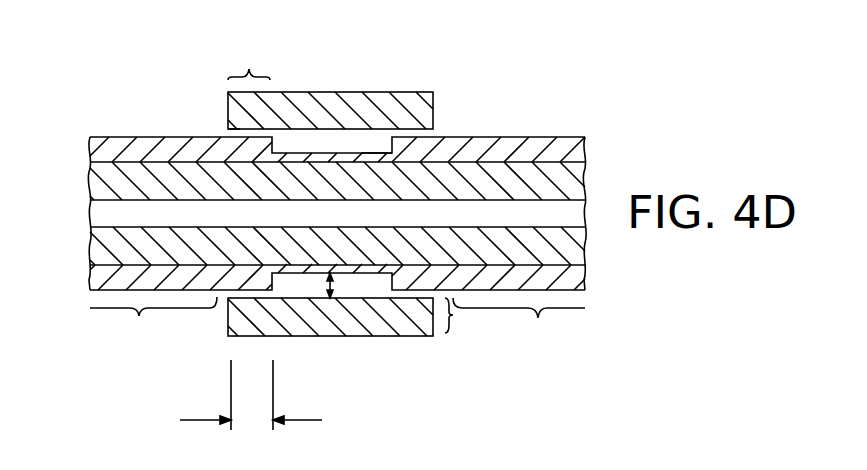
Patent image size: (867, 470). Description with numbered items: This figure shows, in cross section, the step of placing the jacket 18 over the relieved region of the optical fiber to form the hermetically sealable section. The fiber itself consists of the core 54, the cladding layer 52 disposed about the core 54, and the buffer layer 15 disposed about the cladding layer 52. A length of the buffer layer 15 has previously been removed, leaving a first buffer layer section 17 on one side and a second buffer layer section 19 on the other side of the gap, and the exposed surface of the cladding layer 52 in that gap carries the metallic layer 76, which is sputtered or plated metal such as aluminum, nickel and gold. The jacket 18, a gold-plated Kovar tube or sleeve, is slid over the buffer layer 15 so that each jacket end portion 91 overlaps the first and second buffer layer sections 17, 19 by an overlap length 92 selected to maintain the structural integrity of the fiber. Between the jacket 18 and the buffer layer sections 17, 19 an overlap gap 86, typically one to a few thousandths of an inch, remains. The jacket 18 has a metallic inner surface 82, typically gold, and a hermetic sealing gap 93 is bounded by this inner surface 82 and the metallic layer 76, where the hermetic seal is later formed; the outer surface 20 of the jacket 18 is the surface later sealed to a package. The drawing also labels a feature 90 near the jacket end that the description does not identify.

The buffer layer 15 is at (112, 154).
The cladding layer 52 is at (112, 183).
The core 54 is at (110, 218).
The first buffer layer section 17 is at (153, 321).
The second buffer layer section 19 is at (519, 321).
The jacket 18 is at (310, 102).
The outer surface of the jacket 20 is at (382, 336).
The metallic layer 76 is at (362, 153).
The metallic inner surface 82 is at (307, 131).
The overlap gap 86 is at (234, 129).
The gap between chip and substrate 90 is at (453, 315).
The jacket end portion 91 is at (249, 61).
The overlap length 92 is at (202, 420).
The hermetic sealing gap 93 is at (333, 287).